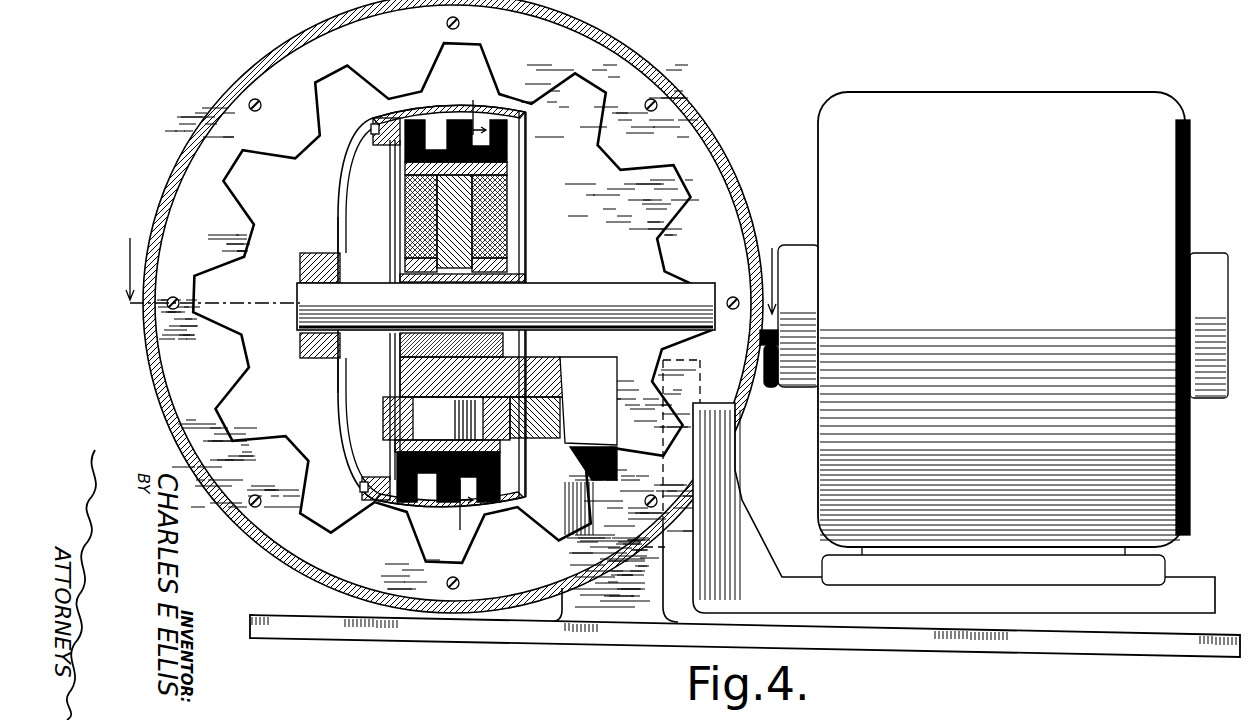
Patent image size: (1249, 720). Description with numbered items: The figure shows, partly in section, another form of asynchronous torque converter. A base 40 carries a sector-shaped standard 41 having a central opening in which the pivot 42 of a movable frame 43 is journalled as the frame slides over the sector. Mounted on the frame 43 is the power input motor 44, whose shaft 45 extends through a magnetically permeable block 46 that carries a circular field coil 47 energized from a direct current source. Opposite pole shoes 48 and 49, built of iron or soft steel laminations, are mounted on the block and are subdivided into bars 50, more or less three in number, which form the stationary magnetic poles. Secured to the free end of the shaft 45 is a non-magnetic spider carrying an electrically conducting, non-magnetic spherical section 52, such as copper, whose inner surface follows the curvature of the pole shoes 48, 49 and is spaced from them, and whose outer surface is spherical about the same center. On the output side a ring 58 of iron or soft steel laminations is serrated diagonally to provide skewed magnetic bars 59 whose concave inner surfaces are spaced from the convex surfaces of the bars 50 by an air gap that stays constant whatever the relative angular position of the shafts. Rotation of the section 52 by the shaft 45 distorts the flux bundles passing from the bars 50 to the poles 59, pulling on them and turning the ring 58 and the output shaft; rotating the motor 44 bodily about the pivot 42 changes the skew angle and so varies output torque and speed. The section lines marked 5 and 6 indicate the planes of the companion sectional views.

The section line 5- 5 is at (449, 264).
The section line 6- 6 is at (473, 315).
The base 40 is at (468, 643).
The sector-shaped standard 41 is at (626, 586).
The pivot 42 is at (428, 417).
The movable frame 43 is at (597, 375).
The power input motor 44 is at (982, 102).
The shaft 45 is at (588, 288).
The magnetically permeable block 46 is at (507, 220).
The field coil 47 is at (510, 192).
The pole shoe 48 is at (510, 152).
The pole shoe 49 is at (503, 467).
The bars 50 is at (400, 493).
The conducting spherical section 52 is at (493, 100).
The ring 58 is at (598, 64).
The magnetic bars 59 is at (232, 360).